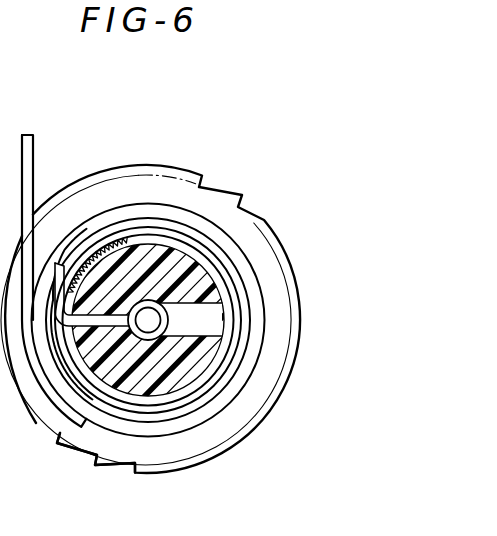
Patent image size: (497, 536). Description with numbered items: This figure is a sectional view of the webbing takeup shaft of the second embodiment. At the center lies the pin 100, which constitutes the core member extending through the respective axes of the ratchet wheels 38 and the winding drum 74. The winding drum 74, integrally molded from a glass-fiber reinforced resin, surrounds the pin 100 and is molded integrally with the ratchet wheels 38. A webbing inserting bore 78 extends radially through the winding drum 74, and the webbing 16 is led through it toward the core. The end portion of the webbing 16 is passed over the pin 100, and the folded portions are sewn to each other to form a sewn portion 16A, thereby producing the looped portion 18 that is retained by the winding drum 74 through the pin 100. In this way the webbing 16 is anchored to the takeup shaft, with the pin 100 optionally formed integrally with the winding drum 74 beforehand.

The webbing 16 is at (33, 158).
The sewn portion 16A is at (113, 236).
The looped portion 18 is at (168, 302).
The ratchet wheels 38 is at (104, 465).
The winding drum 74 is at (165, 397).
The webbing inserting bore 78 is at (214, 336).
The pin 100 is at (160, 318).